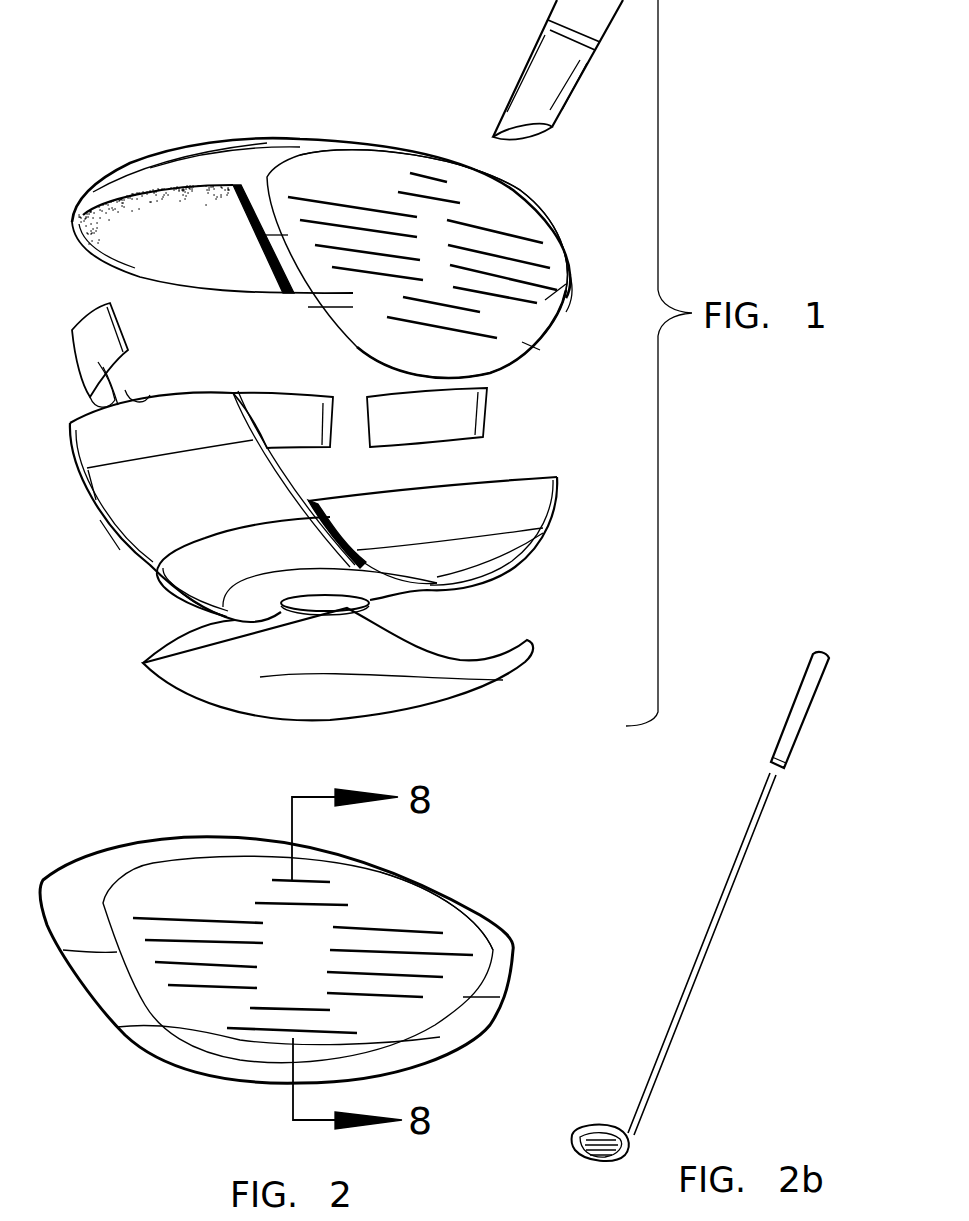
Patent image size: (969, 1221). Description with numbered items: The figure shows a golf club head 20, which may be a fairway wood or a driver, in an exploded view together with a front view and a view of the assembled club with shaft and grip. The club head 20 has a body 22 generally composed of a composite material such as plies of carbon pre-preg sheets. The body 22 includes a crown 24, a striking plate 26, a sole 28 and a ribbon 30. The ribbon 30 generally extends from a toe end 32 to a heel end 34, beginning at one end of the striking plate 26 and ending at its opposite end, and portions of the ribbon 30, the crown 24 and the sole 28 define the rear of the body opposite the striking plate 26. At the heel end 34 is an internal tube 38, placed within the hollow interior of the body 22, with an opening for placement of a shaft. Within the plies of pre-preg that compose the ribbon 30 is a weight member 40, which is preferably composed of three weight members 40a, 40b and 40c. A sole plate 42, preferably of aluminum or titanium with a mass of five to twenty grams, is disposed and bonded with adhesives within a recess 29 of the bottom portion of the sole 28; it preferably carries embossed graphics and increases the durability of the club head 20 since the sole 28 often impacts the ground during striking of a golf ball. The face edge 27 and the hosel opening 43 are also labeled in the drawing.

In FIG. 1, the golf club head 20 is at (252, 92).
In FIG. 2, the golf club head 20 is at (139, 812).
In FIG. 2b, the golf club head 20 is at (590, 1113).
In FIG. 1, the body 22 is at (588, 262).
In FIG. 1, the crown 24 is at (190, 140).
In FIG. 1, the striking plate 26 is at (510, 224).
In FIG. 2, the striking plate 26 is at (221, 880).
In FIG. 1, the face perimeter transition 27 is at (410, 147).
In FIG. 2, the face perimeter transition 27 is at (447, 907).
In FIG. 1, the sole 28 is at (104, 552).
In FIG. 1, the recess 29 is at (188, 610).
In FIG. 1, the ribbon 30 is at (64, 474).
In FIG. 2, the toe end 32 is at (27, 868).
In FIG. 2, the heel end 34 is at (533, 936).
In FIG. 1, the internal tube 38 is at (585, 90).
In FIG. 1, the weight member 40 is at (62, 306).
In FIG. 1, the weight member 40a is at (130, 336).
In FIG. 1, the weight member 40b is at (289, 404).
In FIG. 1, the weight member 40c is at (475, 408).
In FIG. 1, the sole plate 42 is at (560, 642).
In FIG. 2, the sole plate 42 is at (143, 1062).
In FIG. 1, the hosel opening 43 is at (350, 612).